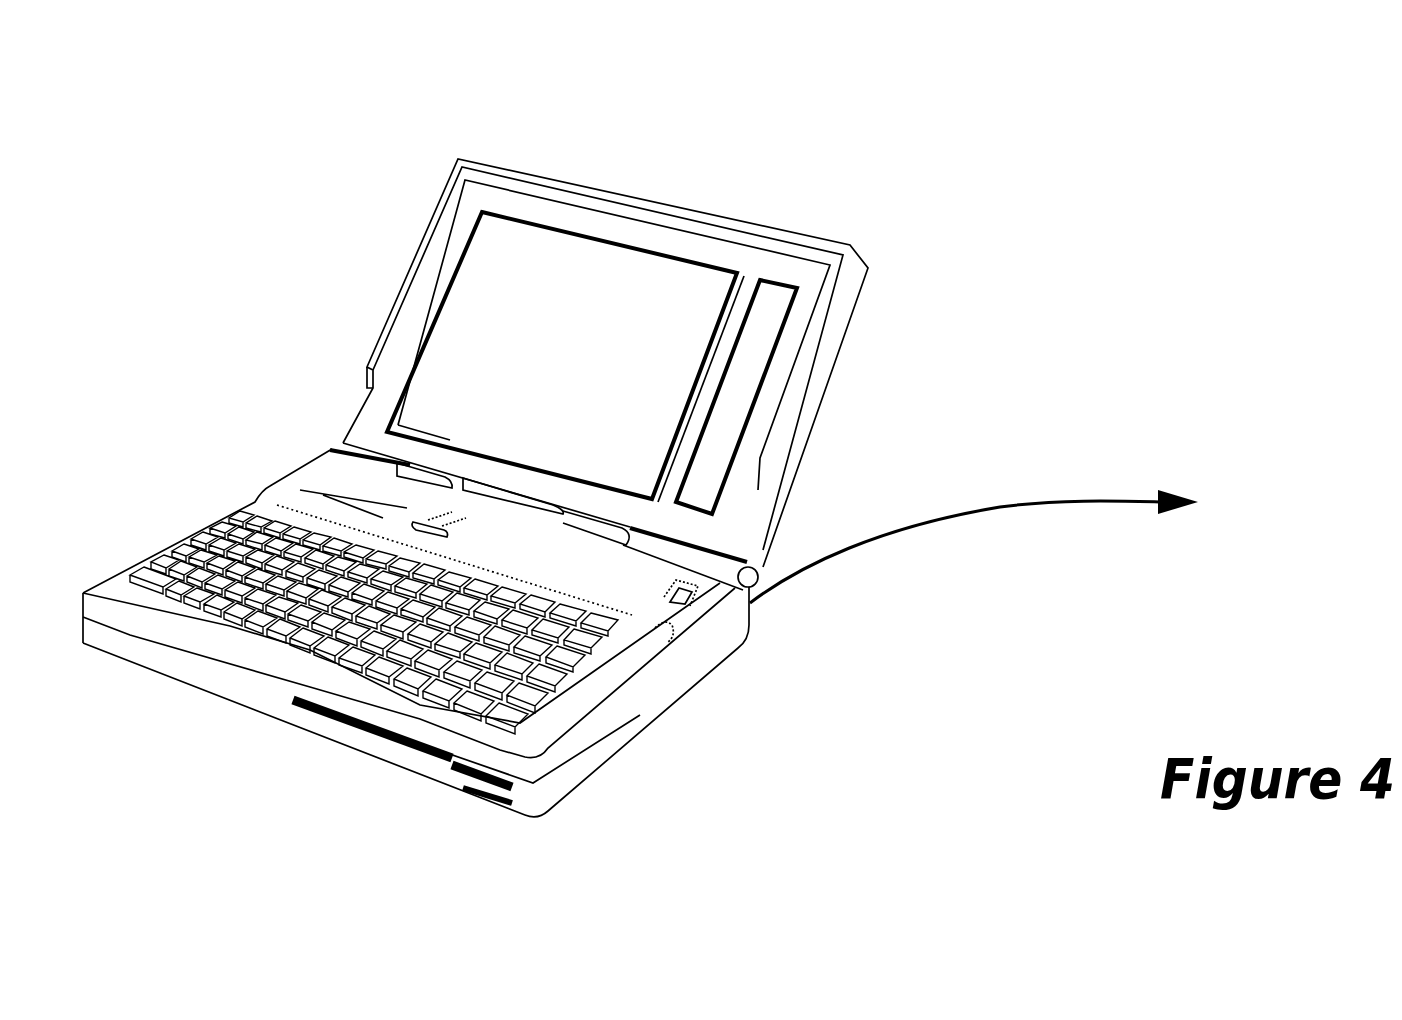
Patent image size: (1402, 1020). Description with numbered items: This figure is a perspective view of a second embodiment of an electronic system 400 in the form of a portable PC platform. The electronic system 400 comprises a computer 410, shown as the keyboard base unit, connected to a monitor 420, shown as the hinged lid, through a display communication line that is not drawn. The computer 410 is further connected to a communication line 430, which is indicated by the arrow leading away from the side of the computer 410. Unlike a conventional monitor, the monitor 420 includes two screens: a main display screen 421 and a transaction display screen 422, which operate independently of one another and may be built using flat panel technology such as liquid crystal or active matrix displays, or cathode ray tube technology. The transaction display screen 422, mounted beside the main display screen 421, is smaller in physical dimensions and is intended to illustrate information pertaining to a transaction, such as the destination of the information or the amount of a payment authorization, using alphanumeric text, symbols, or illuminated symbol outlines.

The electronic system 400 is at (903, 190).
The computer 410 is at (668, 693).
The monitor 420 is at (410, 268).
The main display screen 421 is at (578, 240).
The transaction display screen 422 is at (776, 282).
The communication line 430 is at (1090, 612).